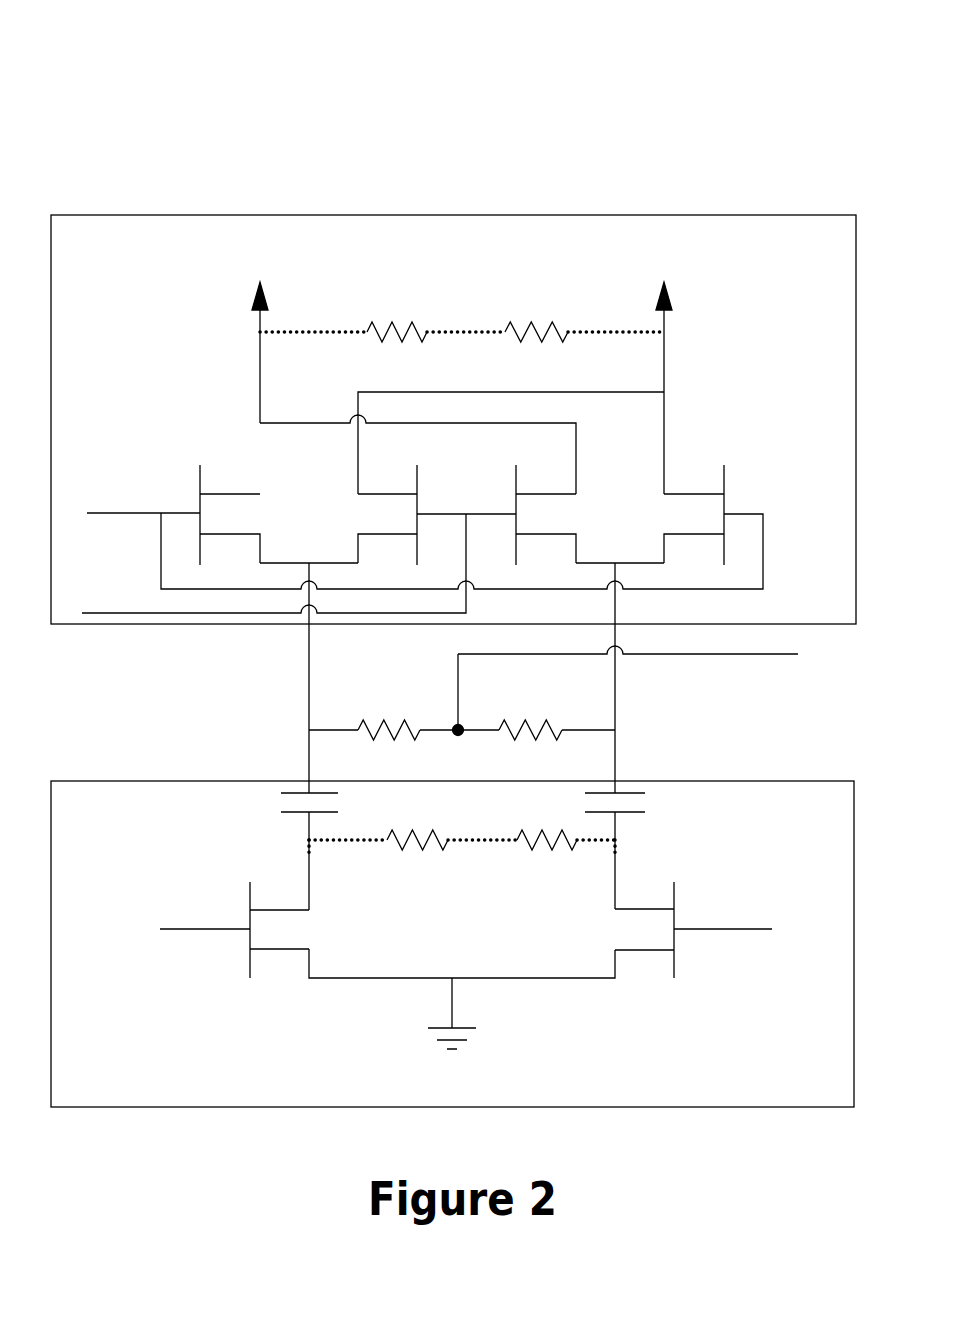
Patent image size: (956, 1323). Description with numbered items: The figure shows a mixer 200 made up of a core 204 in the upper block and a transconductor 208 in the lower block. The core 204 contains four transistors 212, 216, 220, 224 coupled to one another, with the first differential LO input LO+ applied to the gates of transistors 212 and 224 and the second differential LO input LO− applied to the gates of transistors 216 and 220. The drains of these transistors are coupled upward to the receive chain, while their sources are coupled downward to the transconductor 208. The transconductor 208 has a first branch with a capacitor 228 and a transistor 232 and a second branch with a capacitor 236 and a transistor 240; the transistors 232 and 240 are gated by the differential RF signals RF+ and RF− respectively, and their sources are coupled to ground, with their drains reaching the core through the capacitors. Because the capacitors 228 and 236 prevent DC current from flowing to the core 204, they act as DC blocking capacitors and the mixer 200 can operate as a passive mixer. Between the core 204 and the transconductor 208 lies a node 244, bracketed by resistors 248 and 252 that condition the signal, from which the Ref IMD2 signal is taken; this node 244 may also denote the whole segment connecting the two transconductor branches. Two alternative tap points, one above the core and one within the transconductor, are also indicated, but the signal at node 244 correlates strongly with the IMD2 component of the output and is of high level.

The mixer 200 is at (150, 90).
The core 204 is at (158, 213).
The transconductor 208 is at (158, 779).
The transistor 212 is at (241, 515).
The transistor 216 is at (377, 515).
The transistor 220 is at (556, 515).
The transistor 224 is at (683, 515).
The capacitor 228 is at (264, 802).
The transistor 232 is at (245, 930).
The capacitor 236 is at (665, 799).
The transistor 240 is at (683, 930).
The node 244 is at (467, 743).
The resistor 248 is at (372, 698).
The resistor 252 is at (527, 698).